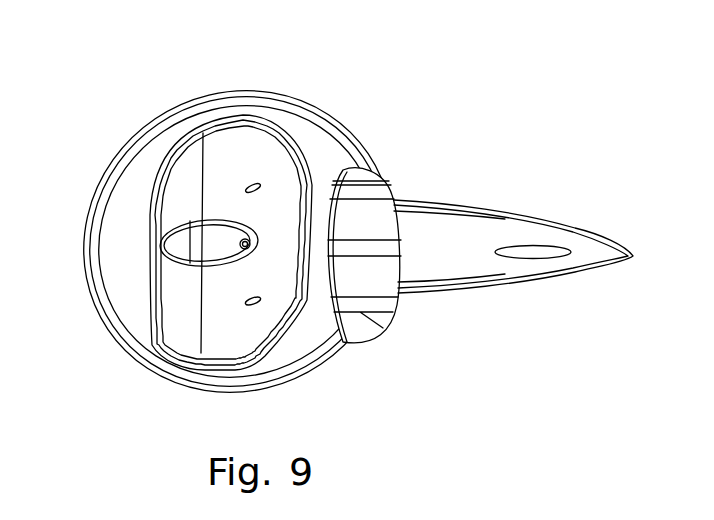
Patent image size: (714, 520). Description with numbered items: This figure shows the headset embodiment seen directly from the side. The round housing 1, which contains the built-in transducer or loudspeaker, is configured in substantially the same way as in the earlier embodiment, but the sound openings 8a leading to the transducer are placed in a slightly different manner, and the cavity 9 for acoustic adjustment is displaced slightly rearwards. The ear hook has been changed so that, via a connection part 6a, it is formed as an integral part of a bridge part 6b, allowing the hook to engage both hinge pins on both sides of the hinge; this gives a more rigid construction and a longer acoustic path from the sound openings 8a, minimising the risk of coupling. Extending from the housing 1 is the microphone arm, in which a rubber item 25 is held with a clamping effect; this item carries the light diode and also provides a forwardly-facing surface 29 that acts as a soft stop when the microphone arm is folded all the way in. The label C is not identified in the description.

The housing 1 is at (301, 78).
The cap C is at (127, 184).
The connection part 6a is at (325, 138).
The bridge part 6b is at (322, 236).
The sound openings 8a is at (257, 182).
The cavity 9 is at (200, 243).
The item of rubber 25 is at (532, 256).
The forwardly-facing surface 29 is at (553, 254).